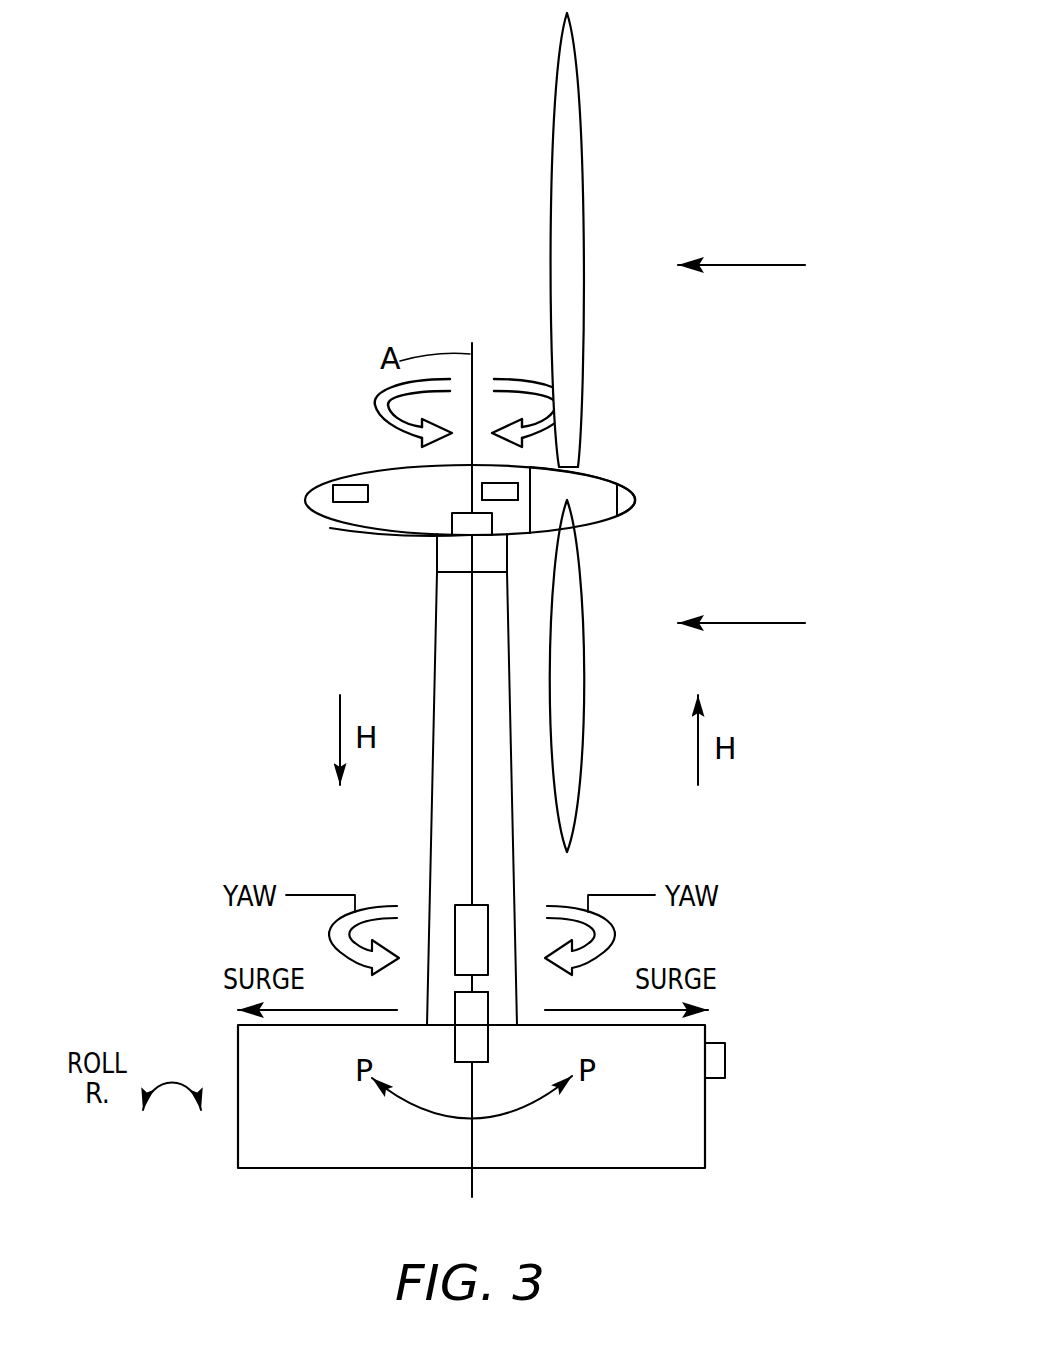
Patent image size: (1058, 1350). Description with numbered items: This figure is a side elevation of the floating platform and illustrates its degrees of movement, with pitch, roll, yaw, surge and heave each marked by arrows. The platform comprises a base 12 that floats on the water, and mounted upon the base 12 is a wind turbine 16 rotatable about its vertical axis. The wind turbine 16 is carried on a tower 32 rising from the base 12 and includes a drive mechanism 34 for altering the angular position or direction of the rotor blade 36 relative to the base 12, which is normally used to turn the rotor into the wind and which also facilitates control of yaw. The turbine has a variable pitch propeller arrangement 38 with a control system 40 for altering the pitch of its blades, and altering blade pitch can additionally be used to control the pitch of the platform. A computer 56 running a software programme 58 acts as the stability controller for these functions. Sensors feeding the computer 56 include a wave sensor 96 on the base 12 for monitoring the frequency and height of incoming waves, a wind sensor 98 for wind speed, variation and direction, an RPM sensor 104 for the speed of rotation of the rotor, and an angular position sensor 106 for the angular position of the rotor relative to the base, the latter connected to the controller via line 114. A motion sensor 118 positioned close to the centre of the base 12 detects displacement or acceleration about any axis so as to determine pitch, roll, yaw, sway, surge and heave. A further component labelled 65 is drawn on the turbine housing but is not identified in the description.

The base 12 is at (695, 1130).
The wind turbine 16 is at (388, 470).
The tower 32 is at (447, 662).
The drive mechanism 34 is at (447, 557).
The rotor blade 36 is at (609, 482).
The variable pitch propeller arrangement 38 is at (584, 477).
The control system 40 is at (505, 502).
The computer 56 is at (466, 1043).
The software programme 58 is at (466, 1043).
The nacelle housing 65 is at (384, 529).
The wave sensor 96 is at (727, 1060).
The wind sensor 98 is at (636, 500).
The RPM sensor 104 is at (508, 502).
The angular position sensor 106 is at (466, 514).
The line 114 is at (345, 493).
The motion sensor 118 is at (476, 912).